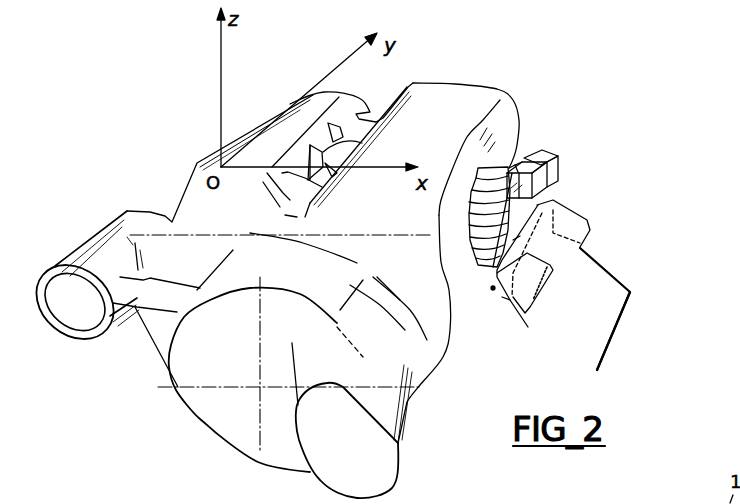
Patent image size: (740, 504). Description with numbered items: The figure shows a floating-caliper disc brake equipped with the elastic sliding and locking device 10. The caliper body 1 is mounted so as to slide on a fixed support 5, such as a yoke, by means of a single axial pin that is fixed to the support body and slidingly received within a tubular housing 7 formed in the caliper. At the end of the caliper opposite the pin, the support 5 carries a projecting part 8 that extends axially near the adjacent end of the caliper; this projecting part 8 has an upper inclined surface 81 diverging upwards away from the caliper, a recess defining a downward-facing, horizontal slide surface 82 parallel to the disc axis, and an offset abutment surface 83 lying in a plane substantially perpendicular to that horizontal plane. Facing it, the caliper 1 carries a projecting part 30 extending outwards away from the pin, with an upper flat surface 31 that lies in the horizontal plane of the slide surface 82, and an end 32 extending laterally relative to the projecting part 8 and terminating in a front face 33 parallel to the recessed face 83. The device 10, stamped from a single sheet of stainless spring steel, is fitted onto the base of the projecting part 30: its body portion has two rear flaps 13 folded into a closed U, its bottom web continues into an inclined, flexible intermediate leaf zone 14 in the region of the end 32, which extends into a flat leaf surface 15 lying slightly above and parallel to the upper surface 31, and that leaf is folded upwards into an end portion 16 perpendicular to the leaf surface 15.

The caliper body 1 is at (465, 70).
The fixed support 5 is at (603, 325).
The tubular housing 7 is at (92, 228).
The projecting part 8 is at (600, 222).
The elastic sliding locking device 10 is at (558, 148).
The rear flaps 13 is at (512, 165).
The intermediate leaf zone 14 is at (550, 185).
The flat leaf surface 15 is at (571, 180).
The end portion 16 is at (614, 503).
The projecting part 30 is at (525, 186).
The upper flat surface 31 is at (518, 165).
The end 32 is at (570, 165).
The front face 33 is at (558, 174).
The upper inclined surface 81 is at (513, 240).
The slide surface 82 is at (493, 288).
The offset abutment surface 83 is at (502, 297).